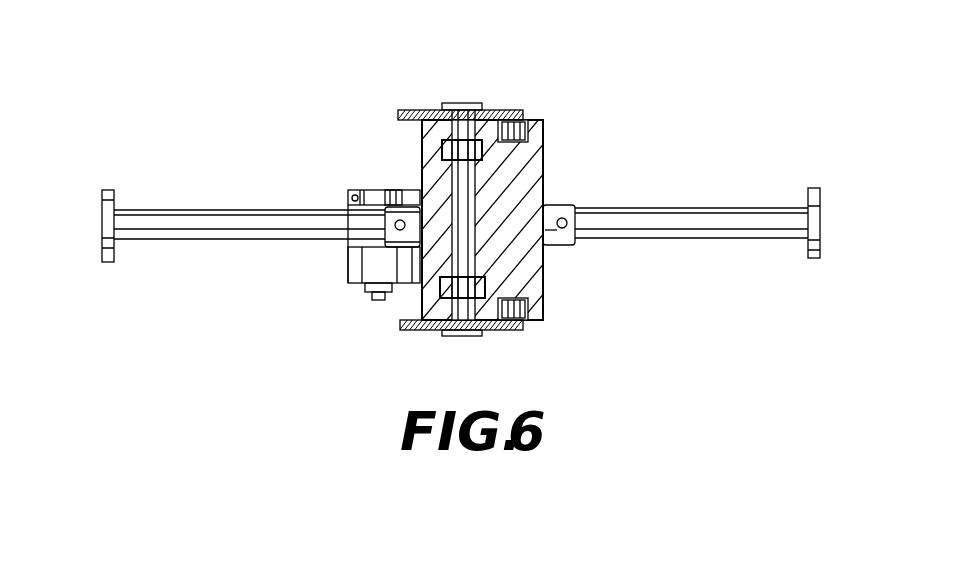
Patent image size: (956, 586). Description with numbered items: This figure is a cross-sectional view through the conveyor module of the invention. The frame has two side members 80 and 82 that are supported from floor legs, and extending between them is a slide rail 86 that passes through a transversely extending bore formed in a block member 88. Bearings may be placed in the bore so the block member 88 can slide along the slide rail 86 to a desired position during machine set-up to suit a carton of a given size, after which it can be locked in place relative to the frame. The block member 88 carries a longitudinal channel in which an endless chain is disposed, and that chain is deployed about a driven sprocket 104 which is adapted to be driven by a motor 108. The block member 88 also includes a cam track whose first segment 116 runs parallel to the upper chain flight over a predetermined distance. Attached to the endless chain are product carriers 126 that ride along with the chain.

The side member 80 is at (812, 188).
The side member 82 is at (105, 192).
The slide rail 86 is at (628, 208).
The block member 88 is at (540, 153).
The driven sprocket 104 is at (443, 153).
The motor 108 is at (345, 260).
The first segment 116 is at (527, 122).
The product carrier 126 is at (423, 110).